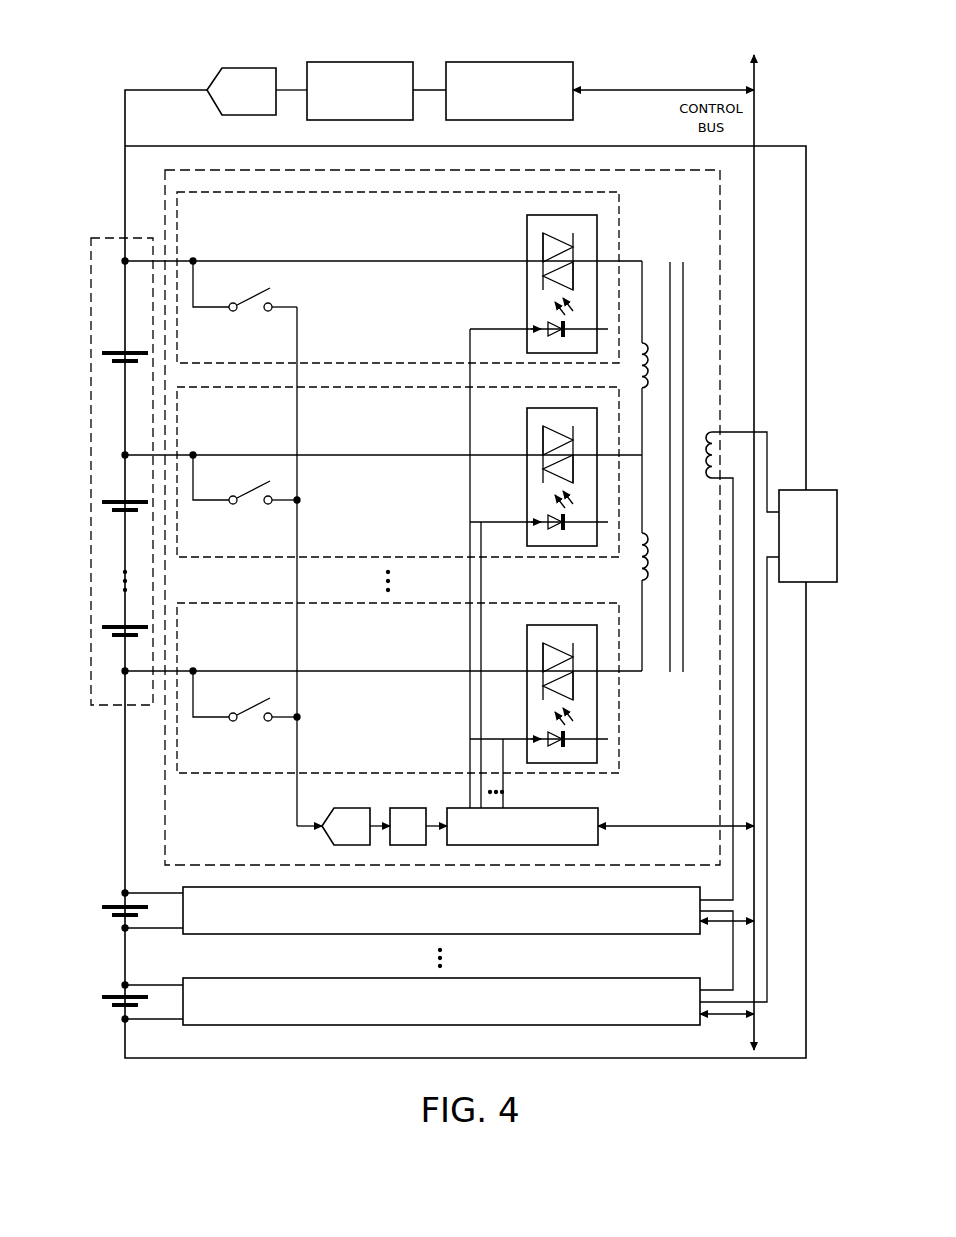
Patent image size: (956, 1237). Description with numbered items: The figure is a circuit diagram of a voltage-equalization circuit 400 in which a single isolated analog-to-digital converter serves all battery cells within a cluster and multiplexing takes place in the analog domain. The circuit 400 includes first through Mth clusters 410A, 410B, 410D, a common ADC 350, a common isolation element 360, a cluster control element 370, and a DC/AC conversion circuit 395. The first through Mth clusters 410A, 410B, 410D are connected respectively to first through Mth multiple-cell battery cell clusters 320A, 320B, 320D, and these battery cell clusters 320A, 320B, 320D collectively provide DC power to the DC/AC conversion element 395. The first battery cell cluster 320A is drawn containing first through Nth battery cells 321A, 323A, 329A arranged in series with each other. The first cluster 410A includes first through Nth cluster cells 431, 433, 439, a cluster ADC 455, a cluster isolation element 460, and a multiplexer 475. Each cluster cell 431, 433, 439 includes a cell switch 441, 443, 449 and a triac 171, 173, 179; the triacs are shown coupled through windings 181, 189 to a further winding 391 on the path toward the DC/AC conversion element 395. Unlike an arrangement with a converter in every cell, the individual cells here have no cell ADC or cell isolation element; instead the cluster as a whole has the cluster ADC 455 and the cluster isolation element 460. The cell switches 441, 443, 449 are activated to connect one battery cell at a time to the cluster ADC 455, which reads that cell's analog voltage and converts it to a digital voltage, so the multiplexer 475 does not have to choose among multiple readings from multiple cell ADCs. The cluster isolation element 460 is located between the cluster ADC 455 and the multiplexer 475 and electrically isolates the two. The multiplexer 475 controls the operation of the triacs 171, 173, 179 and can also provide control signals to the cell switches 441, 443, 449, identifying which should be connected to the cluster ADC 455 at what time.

The voltage-equalization circuit 400 is at (692, 32).
The common ADC 350 is at (256, 67).
The common isolation element 360 is at (366, 61).
The cluster control element 370 is at (526, 61).
The first cluster 410A is at (196, 166).
The second cluster 410B is at (252, 934).
The Mth cluster 410D is at (612, 977).
The first battery cell cluster 320A is at (108, 237).
The second battery cell cluster 320B is at (104, 892).
The Mth battery cell cluster 320D is at (104, 984).
The first battery cell 321A is at (108, 352).
The second battery cell 323A is at (108, 501).
The Nth battery cell 329A is at (108, 626).
The first cluster cell 431 is at (619, 203).
The second cluster cell 433 is at (507, 557).
The Nth cluster cell 439 is at (619, 704).
The cell switch 441 is at (252, 311).
The cell switch 443 is at (252, 504).
The cell switch 449 is at (252, 721).
The triac 171 is at (527, 233).
The triac 173 is at (527, 426).
The triac 179 is at (527, 644).
The first primary winding 181 is at (641, 370).
The Nth primary winding 189 is at (641, 572).
The secondary winding 391 is at (706, 480).
The DC/AC conversion circuit 395 is at (793, 583).
The cluster ADC 455 is at (343, 807).
The cluster isolation element 460 is at (406, 807).
The multiplexer 475 is at (548, 807).